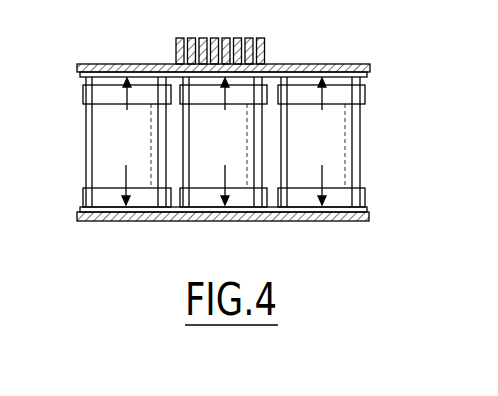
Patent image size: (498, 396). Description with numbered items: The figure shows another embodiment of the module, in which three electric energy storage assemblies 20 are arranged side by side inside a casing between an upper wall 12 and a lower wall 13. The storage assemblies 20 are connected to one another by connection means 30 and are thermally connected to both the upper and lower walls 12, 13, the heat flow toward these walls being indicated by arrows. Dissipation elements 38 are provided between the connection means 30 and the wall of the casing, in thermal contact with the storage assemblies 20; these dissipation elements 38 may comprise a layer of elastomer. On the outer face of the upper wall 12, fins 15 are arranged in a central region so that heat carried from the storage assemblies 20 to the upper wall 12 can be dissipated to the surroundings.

The upper wall 12 is at (327, 64).
The lower wall 13 is at (287, 222).
The fins 15 is at (263, 52).
The electric energy storage assemblies 20 is at (340, 142).
The connection means 30 is at (366, 82).
The dissipation elements 38 is at (360, 208).